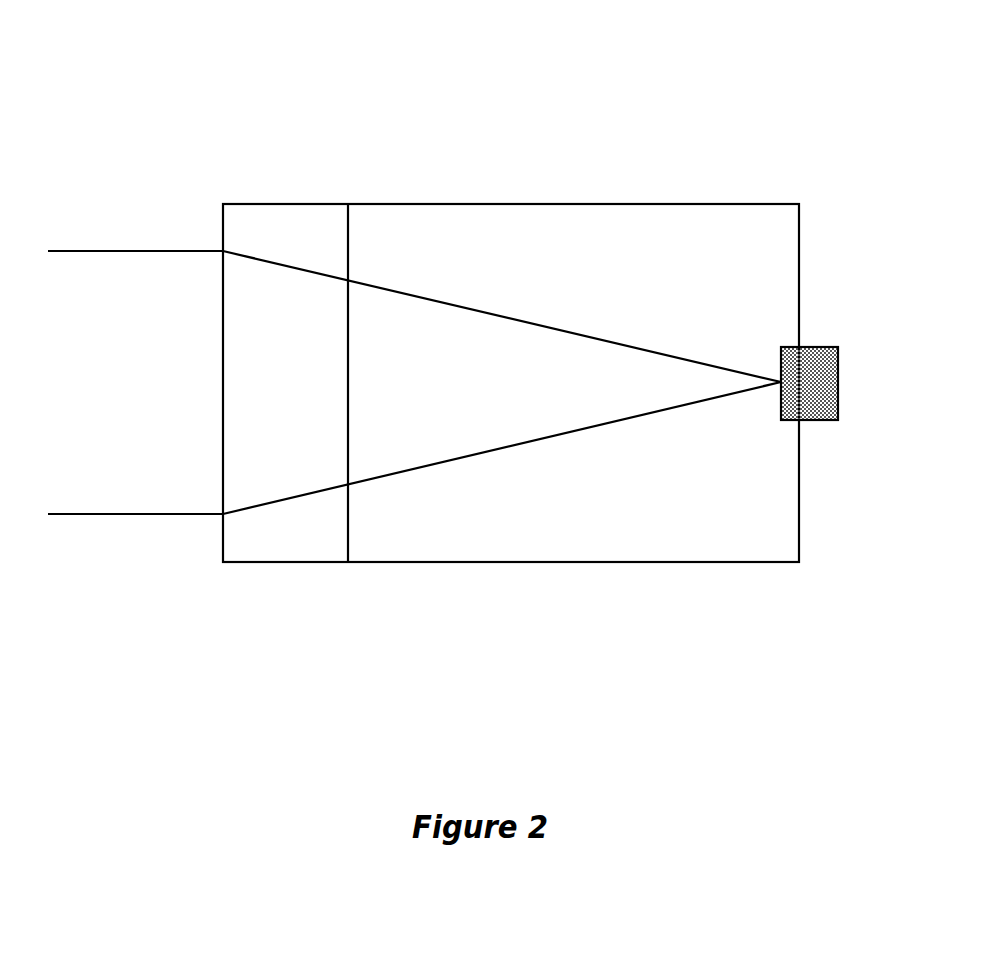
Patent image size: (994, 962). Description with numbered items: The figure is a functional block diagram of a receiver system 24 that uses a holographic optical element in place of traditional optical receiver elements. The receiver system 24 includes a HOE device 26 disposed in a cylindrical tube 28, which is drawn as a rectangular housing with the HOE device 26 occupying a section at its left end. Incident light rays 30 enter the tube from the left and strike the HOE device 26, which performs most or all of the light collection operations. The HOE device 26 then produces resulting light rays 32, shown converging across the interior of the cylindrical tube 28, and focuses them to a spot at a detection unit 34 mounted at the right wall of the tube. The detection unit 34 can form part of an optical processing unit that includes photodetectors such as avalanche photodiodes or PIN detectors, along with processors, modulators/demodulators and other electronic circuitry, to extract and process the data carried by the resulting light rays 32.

The receiver system 24 is at (462, 96).
The HOE device 26 is at (280, 219).
The cylindrical tube 28 is at (507, 563).
The incident light rays 30 is at (175, 514).
The resulting light rays 32 is at (573, 335).
The detection unit 34 is at (819, 346).